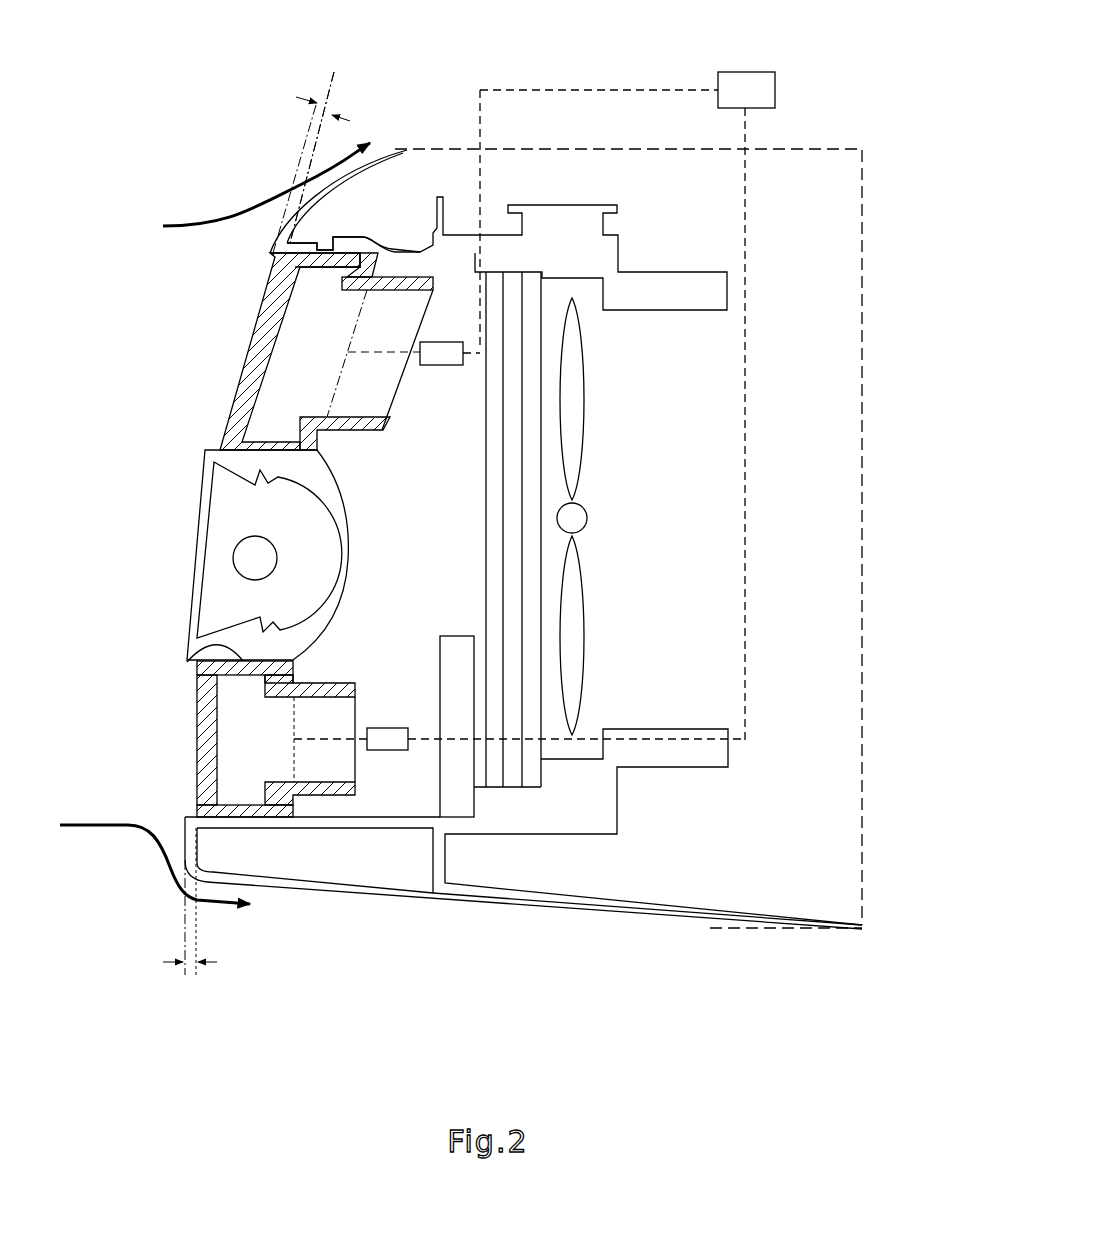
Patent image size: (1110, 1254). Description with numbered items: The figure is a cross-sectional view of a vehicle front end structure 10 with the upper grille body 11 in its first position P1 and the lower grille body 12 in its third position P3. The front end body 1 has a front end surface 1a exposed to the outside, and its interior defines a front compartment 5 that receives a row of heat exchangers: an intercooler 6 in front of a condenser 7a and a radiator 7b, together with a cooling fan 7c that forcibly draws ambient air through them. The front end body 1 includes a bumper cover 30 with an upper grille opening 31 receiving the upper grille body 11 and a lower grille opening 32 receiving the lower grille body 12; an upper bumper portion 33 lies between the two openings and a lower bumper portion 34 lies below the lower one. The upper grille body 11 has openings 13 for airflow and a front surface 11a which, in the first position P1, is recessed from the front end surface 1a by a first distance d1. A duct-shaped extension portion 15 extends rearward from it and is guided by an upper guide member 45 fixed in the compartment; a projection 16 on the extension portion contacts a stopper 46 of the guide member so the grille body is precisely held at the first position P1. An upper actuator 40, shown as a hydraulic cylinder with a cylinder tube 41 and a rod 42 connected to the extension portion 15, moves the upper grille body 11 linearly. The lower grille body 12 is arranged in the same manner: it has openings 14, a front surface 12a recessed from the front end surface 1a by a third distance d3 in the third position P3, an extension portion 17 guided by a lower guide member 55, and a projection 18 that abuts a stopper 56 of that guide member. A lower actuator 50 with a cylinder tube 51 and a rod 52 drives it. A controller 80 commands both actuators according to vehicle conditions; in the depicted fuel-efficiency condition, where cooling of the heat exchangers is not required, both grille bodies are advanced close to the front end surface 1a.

The front end structure 10 is at (174, 98).
The front compartment 5 is at (676, 531).
The intercooler 6 is at (455, 636).
The condenser 7a is at (493, 673).
The radiator 7b is at (530, 636).
The cooling fan 7c is at (580, 398).
The controller 80 is at (745, 72).
The front end body 1 is at (295, 174).
The front end surface 1a is at (287, 229).
The first distance d1 is at (311, 162).
The first position P1 is at (323, 137).
The upper grille body 11 is at (287, 323).
The front surface 11a is at (272, 258).
The openings 13 is at (257, 355).
The extension portion 15 is at (337, 252).
The projection 16 is at (376, 270).
The stopper 46 is at (342, 273).
The upper actuator 40 is at (381, 390).
The cylinder tube 41 is at (442, 341).
The rod 42 is at (375, 362).
The upper guide member 45 is at (363, 431).
The bumper cover 30 is at (238, 538).
The upper grille opening 31 is at (220, 438).
The lower grille opening 32 is at (187, 660).
The upper bumper portion 33 is at (332, 533).
The lower grille body 12 is at (228, 729).
The front surface 12a is at (197, 803).
The openings 14 is at (198, 725).
The extension portion 17 is at (187, 655).
The projection 18 is at (293, 677).
The stopper 56 is at (265, 680).
The lower actuator 50 is at (341, 724).
The cylinder tube 51 is at (385, 752).
The rod 52 is at (335, 738).
The lower bumper portion 34 is at (285, 882).
The lower guide member 55 is at (335, 798).
The third position P3 is at (197, 938).
The third distance d3 is at (190, 978).